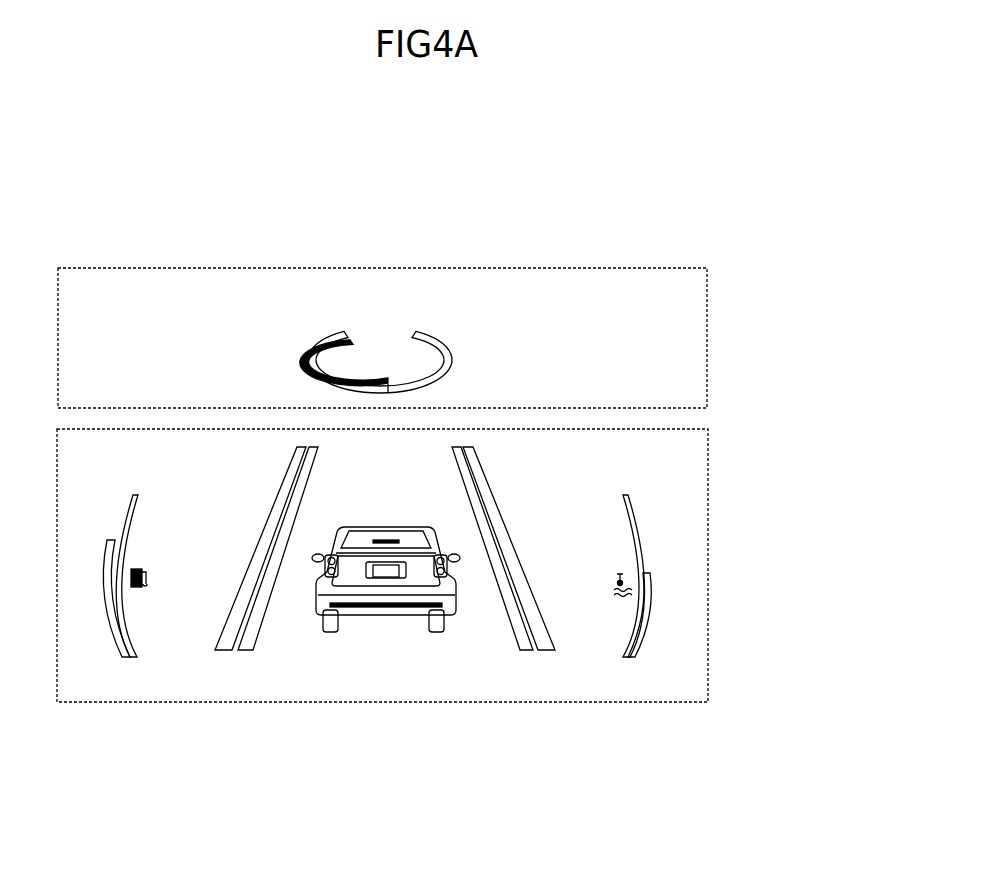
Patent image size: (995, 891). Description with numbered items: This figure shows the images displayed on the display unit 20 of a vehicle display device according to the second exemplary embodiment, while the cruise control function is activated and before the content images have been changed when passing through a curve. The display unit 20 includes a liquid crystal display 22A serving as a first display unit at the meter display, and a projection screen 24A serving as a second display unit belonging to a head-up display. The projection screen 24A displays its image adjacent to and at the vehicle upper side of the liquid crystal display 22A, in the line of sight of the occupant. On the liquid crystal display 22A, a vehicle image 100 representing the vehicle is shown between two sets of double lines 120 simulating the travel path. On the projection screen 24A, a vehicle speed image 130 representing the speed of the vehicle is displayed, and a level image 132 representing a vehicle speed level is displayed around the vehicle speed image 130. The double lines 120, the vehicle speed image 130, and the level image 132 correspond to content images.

The display unit 20 is at (737, 266).
The projection screen 24A is at (707, 340).
The liquid crystal display 22A is at (708, 568).
The vehicle speed image 130 is at (399, 305).
The level image 132 is at (315, 348).
The vehicle image 100 is at (327, 598).
The double lines 120 is at (518, 637).